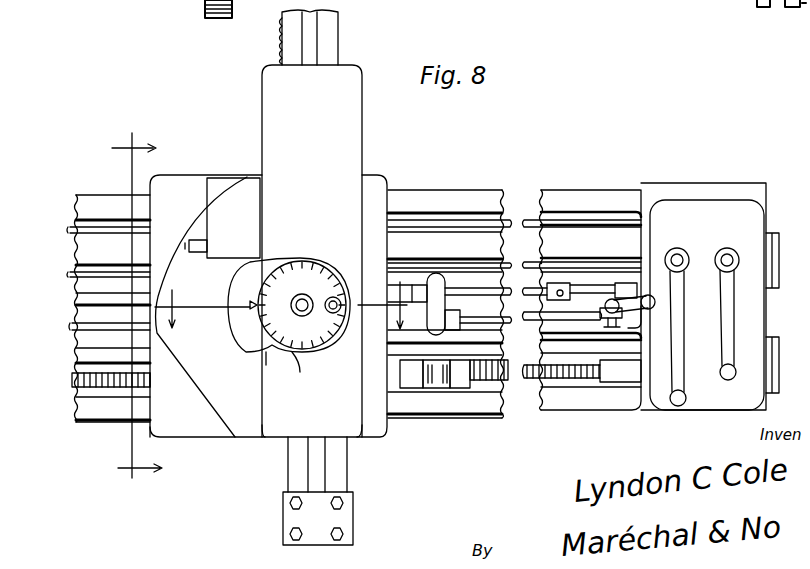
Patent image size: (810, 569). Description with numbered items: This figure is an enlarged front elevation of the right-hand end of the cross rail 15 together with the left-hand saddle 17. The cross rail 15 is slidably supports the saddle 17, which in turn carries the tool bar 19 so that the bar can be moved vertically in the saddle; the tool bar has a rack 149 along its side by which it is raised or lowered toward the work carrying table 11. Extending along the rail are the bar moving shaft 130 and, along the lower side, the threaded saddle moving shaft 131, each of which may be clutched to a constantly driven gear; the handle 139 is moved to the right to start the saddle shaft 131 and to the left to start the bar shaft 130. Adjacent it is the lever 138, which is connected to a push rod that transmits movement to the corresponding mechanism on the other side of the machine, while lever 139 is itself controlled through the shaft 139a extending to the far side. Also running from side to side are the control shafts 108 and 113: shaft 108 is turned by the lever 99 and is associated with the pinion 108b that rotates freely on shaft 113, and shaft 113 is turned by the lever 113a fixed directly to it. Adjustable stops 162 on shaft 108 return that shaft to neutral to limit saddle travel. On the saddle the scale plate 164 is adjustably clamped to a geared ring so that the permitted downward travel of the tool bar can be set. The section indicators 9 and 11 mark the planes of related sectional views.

The section line 9- 9 is at (137, 310).
The work carrying table 11 is at (281, 305).
The cross rail 15 is at (460, 190).
The left-hand tool saddle 17 is at (268, 251).
The tool bar 19 is at (336, 31).
The lever 99 is at (646, 310).
The control shaft 108 is at (590, 288).
The pinion 108b is at (626, 330).
The control shaft 113 is at (568, 312).
The lever 113a is at (600, 322).
The bar moving shaft 130 is at (478, 262).
The threaded saddle moving shaft 131 is at (490, 372).
The lever 138 is at (677, 406).
The handle 139 is at (724, 380).
The shaft 139a is at (612, 218).
The rack 149 is at (280, 52).
The stops 162 is at (556, 283).
The adjustable plate 164 is at (303, 360).